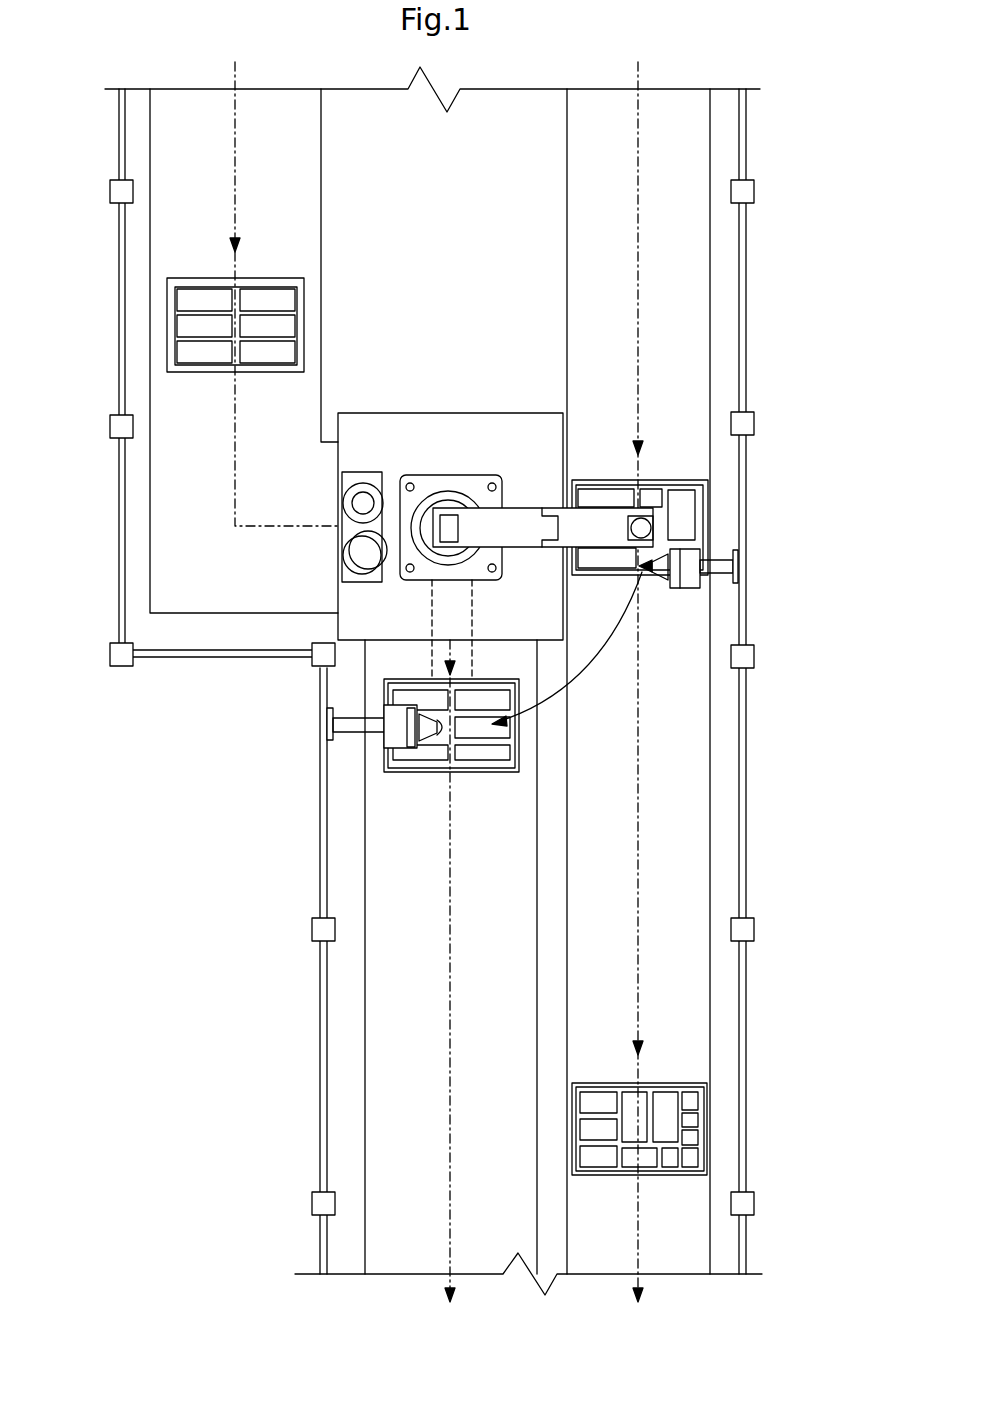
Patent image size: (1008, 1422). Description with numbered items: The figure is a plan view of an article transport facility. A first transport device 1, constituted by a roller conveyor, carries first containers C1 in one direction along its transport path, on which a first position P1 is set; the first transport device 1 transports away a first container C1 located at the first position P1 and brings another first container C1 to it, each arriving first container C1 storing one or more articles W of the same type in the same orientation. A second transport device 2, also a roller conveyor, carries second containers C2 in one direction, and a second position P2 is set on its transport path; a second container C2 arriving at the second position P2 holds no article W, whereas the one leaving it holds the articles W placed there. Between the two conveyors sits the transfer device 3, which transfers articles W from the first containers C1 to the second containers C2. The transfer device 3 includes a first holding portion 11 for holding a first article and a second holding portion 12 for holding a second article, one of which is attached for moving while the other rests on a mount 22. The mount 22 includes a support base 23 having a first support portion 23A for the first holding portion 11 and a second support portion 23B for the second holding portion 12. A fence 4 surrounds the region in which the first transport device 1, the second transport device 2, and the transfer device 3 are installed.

The first transport device 1 is at (128, 308).
The second transport device 2 is at (722, 335).
The transfer device 3 is at (519, 508).
The fence 4 is at (118, 243).
The first holding portion 11 is at (395, 583).
The second holding portion 12 is at (378, 484).
The mount 22 is at (469, 413).
The support base 23 is at (360, 452).
The first support portion 23A is at (338, 560).
The second support portion 23B is at (338, 489).
The article W is at (220, 297).
The first container C1 is at (203, 375).
The second container C2 is at (600, 479).
The first position P1 is at (528, 748).
The second position P2 is at (730, 477).